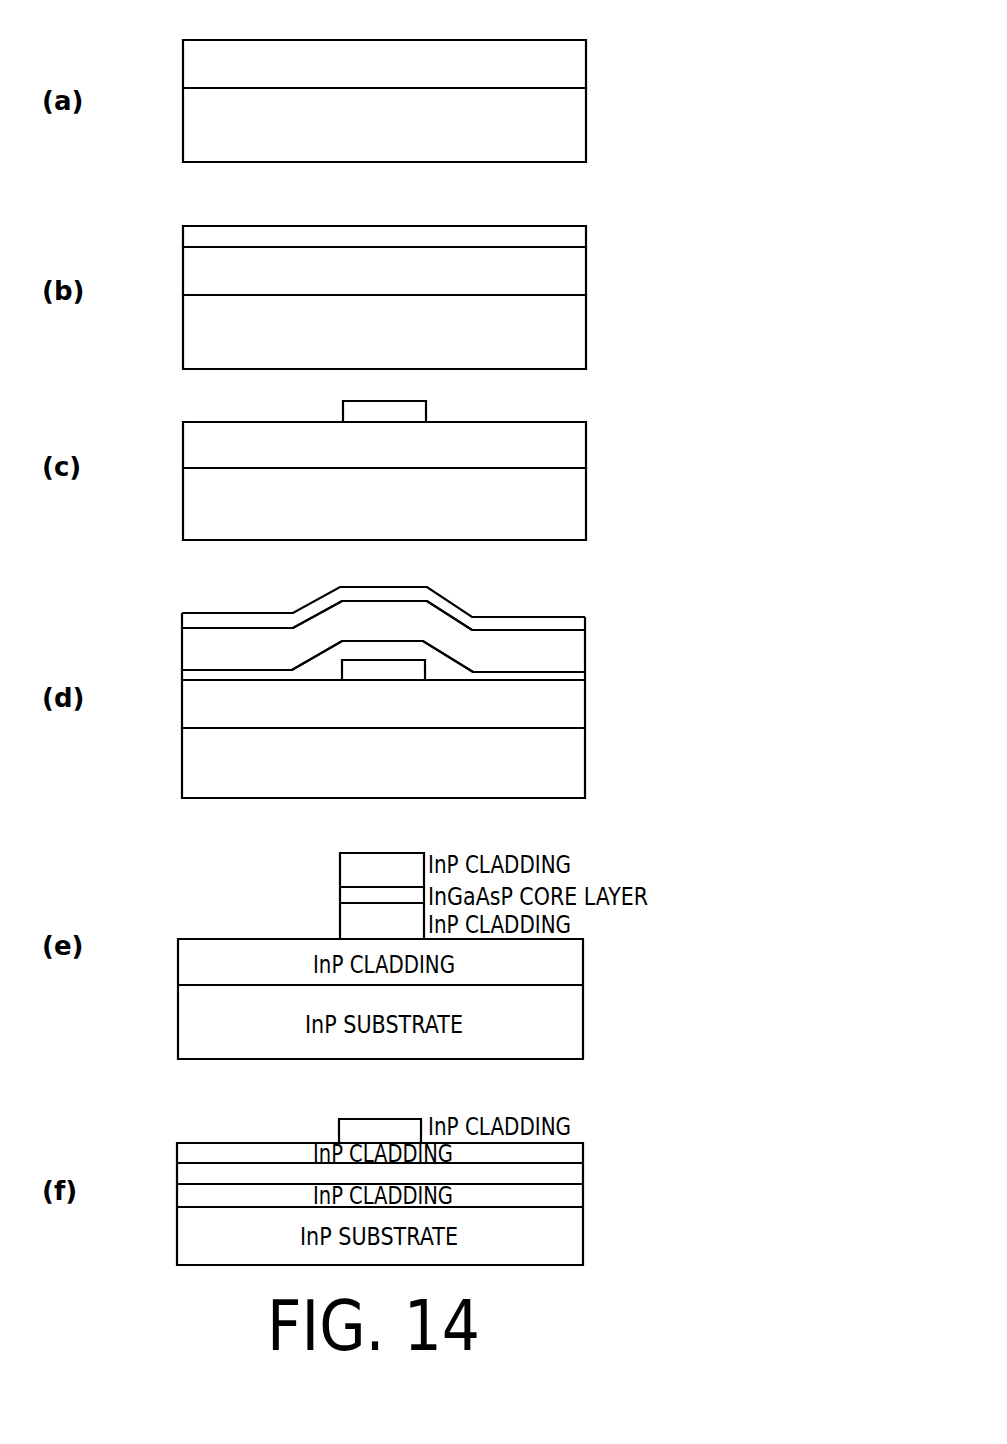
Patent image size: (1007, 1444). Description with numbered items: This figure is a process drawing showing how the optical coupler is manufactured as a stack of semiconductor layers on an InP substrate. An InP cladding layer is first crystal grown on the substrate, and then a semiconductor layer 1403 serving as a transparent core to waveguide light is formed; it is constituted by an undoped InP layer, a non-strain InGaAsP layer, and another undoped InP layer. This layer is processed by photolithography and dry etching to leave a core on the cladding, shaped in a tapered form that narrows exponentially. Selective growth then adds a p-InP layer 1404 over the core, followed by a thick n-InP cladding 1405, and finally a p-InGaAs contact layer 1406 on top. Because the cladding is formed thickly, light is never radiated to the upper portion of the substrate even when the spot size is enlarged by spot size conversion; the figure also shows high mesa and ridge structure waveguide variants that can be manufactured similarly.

The semiconductor layer 1403 is at (573, 239).
The p-InP layer 1404 is at (573, 679).
The n-InP cladding 1405 is at (573, 653).
The p-InGaAs contact layer 1406 is at (573, 624).